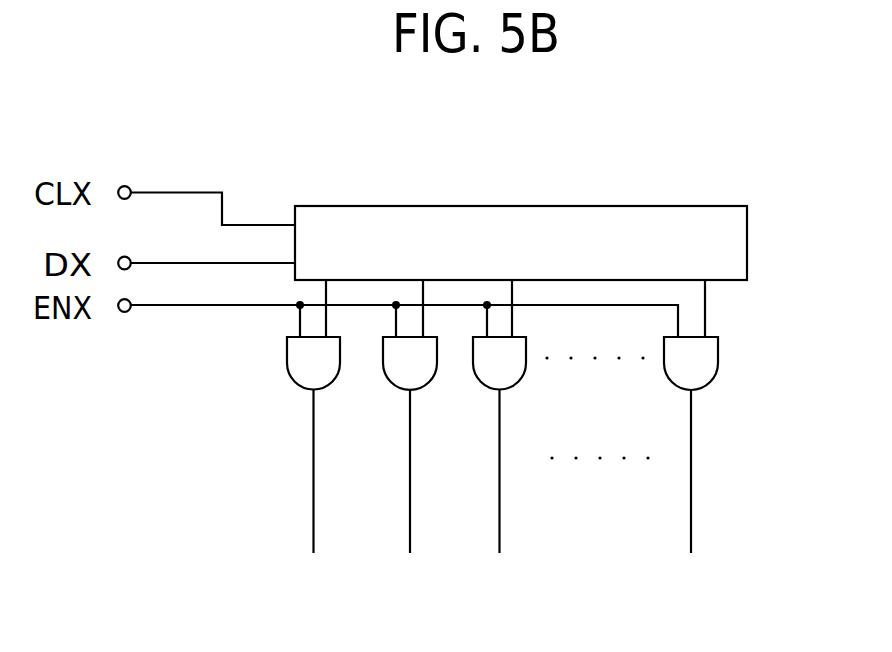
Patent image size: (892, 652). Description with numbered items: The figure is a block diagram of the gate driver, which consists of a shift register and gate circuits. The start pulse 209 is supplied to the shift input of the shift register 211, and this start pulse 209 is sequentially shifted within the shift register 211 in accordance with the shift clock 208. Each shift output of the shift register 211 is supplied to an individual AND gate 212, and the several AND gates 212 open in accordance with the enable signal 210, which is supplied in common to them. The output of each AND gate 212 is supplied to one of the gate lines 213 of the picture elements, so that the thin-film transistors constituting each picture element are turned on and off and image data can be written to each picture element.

The shift clock 208 is at (121, 188).
The start pulse 209 is at (122, 257).
The enable signal 210 is at (125, 312).
The shift register 211 is at (642, 206).
The AND gate 212 is at (667, 366).
The gate line 213 is at (691, 490).